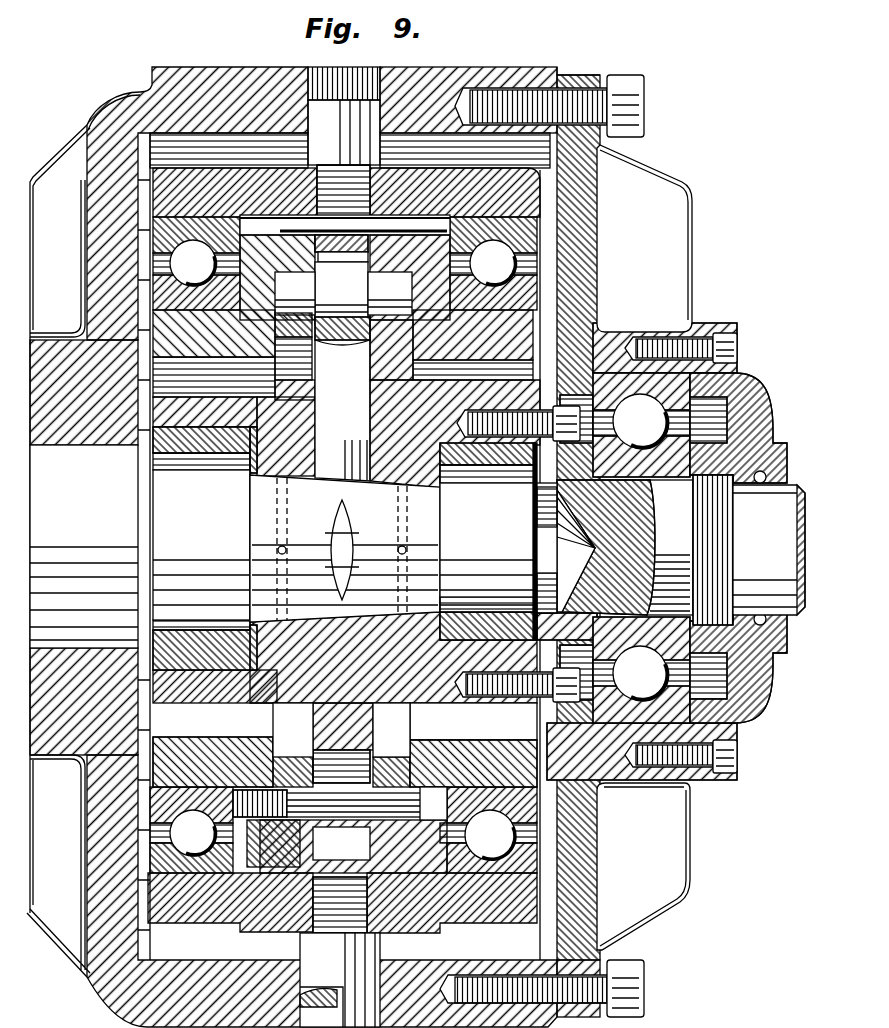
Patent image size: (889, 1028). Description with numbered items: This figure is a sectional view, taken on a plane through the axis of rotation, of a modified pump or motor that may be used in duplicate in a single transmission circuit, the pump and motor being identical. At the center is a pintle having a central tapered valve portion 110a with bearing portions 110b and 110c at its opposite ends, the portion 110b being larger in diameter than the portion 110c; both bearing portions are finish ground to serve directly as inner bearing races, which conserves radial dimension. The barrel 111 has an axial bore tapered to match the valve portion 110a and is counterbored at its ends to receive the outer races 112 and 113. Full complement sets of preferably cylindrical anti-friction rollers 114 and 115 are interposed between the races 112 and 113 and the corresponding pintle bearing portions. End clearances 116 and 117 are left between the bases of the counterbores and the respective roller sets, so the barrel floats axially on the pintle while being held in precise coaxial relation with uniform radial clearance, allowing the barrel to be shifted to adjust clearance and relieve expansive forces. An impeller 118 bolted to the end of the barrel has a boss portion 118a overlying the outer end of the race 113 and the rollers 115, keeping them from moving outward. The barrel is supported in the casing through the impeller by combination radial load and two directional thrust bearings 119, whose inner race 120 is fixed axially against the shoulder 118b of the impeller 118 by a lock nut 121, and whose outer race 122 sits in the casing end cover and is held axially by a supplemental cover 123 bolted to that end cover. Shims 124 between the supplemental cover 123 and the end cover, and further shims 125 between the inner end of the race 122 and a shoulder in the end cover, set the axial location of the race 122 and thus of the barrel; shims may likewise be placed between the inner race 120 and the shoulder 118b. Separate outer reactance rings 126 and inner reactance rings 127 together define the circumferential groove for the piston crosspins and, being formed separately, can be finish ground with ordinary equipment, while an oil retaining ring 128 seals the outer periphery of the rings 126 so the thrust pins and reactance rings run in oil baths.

The outer race 112 is at (148, 451).
The anti-friction rollers 114 is at (175, 462).
The end clearance 116 is at (248, 470).
The bearing portion 110b is at (228, 545).
The central tapered valve portion 110a is at (270, 530).
The barrel 111 is at (382, 477).
The end clearance 117 is at (404, 497).
The outer race 113 is at (470, 462).
The anti-friction rollers 115 is at (489, 482).
The boss portion 118a is at (531, 492).
The bearing portion 110c is at (500, 556).
The shims 125 is at (603, 320).
The shims 124 is at (707, 327).
The supplemental cover 123 is at (737, 332).
The outer race 122 is at (738, 374).
The combination radial load and two directional thrust bearings 119 is at (641, 548).
The inner race 120 is at (670, 547).
The shoulder 118b is at (621, 547).
The lock nut 121 is at (732, 550).
The impeller 118 is at (740, 533).
The outer reactance rings 126 is at (190, 740).
The inner reactance rings 127 is at (305, 762).
The oil retaining ring 128 is at (353, 843).